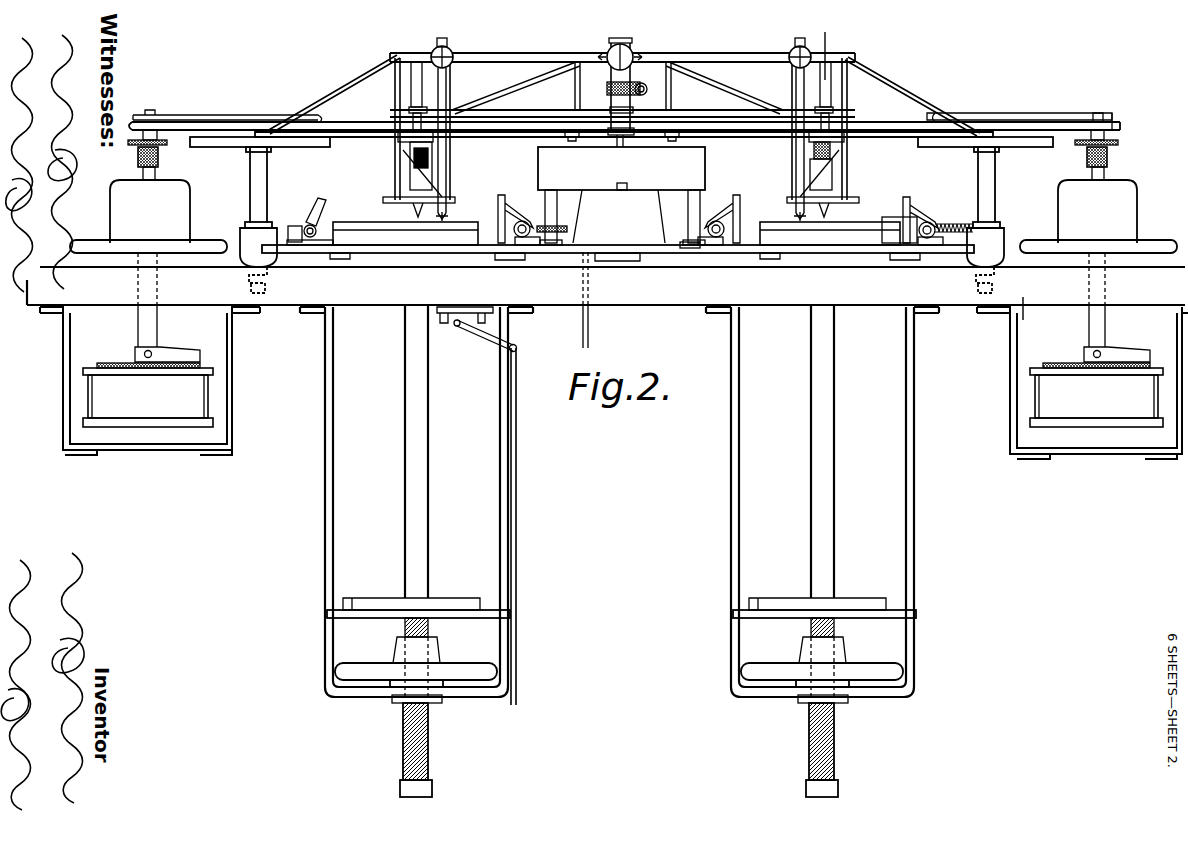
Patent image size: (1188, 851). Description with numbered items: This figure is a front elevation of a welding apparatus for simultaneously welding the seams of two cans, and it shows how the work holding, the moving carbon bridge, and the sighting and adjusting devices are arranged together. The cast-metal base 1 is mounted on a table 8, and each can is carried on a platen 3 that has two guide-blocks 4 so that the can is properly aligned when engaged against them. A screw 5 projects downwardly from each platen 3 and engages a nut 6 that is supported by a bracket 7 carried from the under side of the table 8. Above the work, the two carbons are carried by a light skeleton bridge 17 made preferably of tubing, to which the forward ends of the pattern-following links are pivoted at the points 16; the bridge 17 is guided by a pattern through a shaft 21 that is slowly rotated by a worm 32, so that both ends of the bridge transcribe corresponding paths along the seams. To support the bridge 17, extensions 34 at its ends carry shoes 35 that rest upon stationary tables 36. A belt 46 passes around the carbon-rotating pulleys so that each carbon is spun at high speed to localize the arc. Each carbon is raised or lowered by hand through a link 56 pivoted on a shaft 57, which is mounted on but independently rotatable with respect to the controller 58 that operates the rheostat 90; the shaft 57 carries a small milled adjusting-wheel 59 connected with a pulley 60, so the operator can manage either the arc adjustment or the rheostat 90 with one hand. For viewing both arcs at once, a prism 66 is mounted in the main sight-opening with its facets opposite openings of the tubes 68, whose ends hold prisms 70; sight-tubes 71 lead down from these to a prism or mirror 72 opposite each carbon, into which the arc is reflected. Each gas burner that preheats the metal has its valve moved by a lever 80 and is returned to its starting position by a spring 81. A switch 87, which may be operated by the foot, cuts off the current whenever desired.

The base 1 is at (380, 282).
The platen 3 is at (910, 612).
The guide-blocks 4 is at (853, 600).
The screw 5 is at (840, 746).
The nut 6 is at (840, 652).
The bracket 7 is at (915, 645).
The table 8 is at (925, 177).
The pivots 16 is at (672, 138).
The skeleton bridge 17 is at (617, 88).
The shaft 21 is at (618, 42).
The worm 32 is at (646, 84).
The extensions 34 is at (890, 80).
The shoes 35 is at (1007, 132).
The stationary tables 36 is at (1012, 148).
The belt 46 is at (724, 118).
The second link 56 is at (1062, 113).
The shaft 57 is at (1104, 169).
The controller 58 is at (1140, 214).
The milled adjusting-wheel 59 is at (1078, 143).
The pulley 60 is at (1113, 113).
The prism 66 is at (627, 50).
The tubes 68 is at (706, 53).
The prisms 70 is at (812, 50).
The sight-tubes 71 is at (803, 86).
The prism or mirror 72 is at (796, 217).
The lever 80 is at (910, 205).
The spring 81 is at (960, 218).
The switch 87 is at (473, 337).
The rheostat 90 is at (1050, 398).